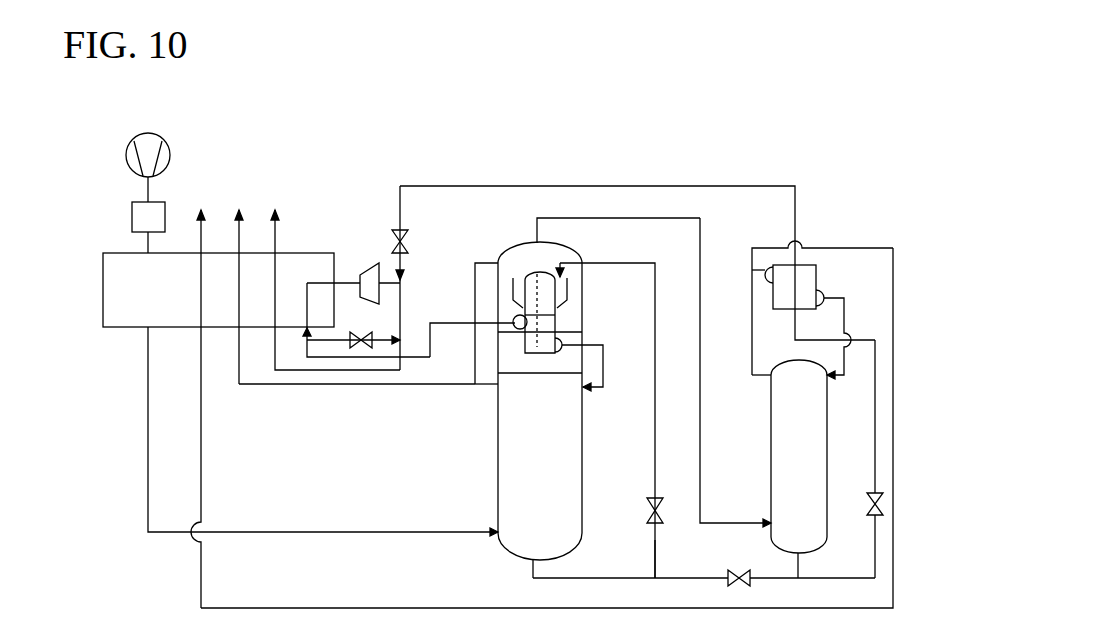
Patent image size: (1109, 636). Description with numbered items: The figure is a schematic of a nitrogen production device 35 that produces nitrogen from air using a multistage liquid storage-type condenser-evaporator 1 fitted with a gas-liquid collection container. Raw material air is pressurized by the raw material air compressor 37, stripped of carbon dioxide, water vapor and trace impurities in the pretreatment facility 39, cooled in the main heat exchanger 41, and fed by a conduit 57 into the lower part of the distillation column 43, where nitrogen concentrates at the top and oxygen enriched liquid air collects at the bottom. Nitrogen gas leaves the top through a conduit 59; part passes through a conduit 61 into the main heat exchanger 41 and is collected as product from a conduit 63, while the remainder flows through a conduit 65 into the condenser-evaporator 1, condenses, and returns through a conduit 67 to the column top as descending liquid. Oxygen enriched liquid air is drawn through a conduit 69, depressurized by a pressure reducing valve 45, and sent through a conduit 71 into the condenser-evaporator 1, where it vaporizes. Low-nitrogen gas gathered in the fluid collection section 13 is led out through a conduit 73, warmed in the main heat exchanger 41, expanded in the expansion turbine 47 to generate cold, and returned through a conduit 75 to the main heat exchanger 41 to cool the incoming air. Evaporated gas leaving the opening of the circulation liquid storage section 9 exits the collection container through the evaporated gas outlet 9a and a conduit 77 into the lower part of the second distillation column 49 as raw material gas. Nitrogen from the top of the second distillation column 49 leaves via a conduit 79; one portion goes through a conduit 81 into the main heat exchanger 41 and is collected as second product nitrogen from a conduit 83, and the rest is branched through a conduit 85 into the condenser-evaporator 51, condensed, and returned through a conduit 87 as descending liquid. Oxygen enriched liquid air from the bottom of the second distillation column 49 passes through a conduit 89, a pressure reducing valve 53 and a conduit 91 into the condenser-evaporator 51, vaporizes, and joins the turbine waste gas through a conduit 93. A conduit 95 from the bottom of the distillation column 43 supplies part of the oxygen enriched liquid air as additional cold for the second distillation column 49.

The multistage liquid storage-type condenser-evaporator 1 is at (525, 272).
The circulation liquid storage section 9 is at (567, 286).
The evaporated gas outlet 9a is at (540, 243).
The fluid collection section 13 is at (514, 318).
The nitrogen production device 35 is at (820, 140).
The raw material air compressor 37 is at (126, 152).
The pretreatment facility 39 is at (132, 215).
The main heat exchanger 41 is at (103, 291).
The distillation column 43 is at (498, 470).
The pressure reducing valve 45 is at (647, 511).
The expansion turbine 47 is at (368, 268).
The second distillation column 49 is at (771, 440).
The condenser-evaporator 51 is at (818, 273).
The pressure reducing valve 53 is at (868, 506).
The conduit 57 is at (330, 532).
The conduit 59 is at (491, 386).
The conduit 61 is at (325, 384).
The conduit 63 is at (239, 238).
The conduit 65 is at (475, 348).
The conduit 67 is at (603, 366).
The conduit 69 is at (656, 552).
The conduit 71 is at (655, 430).
The conduit 73 is at (432, 320).
The conduit 75 is at (275, 350).
The conduit 77 is at (702, 236).
The conduit 79 is at (752, 317).
The conduit 81 is at (893, 402).
The conduit 83 is at (201, 240).
The conduit 85 is at (758, 268).
The conduit 87 is at (849, 360).
The conduit 89 is at (838, 578).
The conduit 91 is at (875, 436).
The conduit 93 is at (628, 186).
The conduit 95 is at (722, 580).